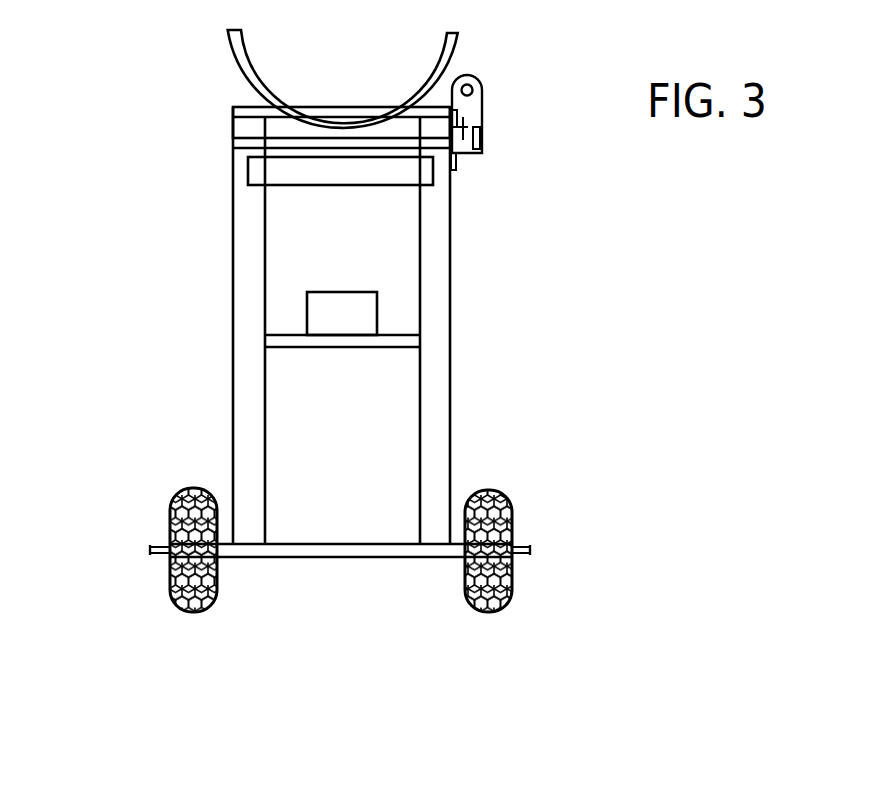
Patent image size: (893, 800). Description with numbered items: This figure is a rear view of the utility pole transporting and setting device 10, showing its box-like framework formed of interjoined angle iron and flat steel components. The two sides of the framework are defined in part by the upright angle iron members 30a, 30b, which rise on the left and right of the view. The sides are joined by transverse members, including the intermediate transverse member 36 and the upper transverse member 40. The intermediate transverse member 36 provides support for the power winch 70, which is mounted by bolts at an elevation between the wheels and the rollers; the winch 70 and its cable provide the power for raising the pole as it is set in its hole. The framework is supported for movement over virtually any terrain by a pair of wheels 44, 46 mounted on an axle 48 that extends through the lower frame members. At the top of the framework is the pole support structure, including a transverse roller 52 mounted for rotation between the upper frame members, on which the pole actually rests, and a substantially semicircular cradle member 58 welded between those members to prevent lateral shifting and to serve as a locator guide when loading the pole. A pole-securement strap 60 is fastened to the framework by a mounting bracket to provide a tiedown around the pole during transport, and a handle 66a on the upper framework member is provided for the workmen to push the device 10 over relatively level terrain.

The utility pole transporting and setting device 10 is at (618, 258).
The upright angle iron member 30a is at (248, 263).
The upright angle iron member 30b is at (437, 338).
The intermediate transverse member 36 is at (265, 349).
The upper transverse member 40 is at (283, 170).
The wheel 44 is at (502, 505).
The wheel 46 is at (183, 508).
The axle 48 is at (292, 557).
The transverse roller 52 is at (273, 128).
The semicircular cradle member 58 is at (227, 47).
The pole-securement strap 60 is at (480, 77).
The handle 66a is at (457, 167).
The power winch 70 is at (360, 292).